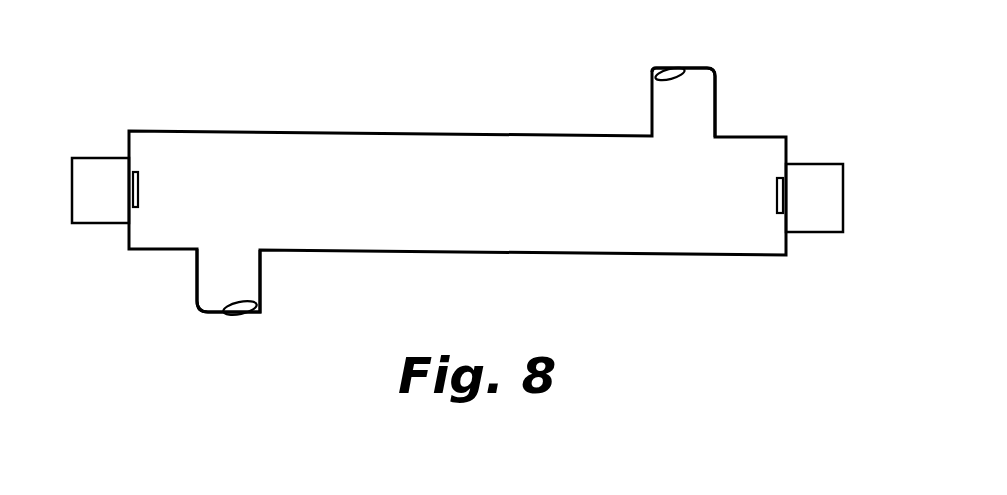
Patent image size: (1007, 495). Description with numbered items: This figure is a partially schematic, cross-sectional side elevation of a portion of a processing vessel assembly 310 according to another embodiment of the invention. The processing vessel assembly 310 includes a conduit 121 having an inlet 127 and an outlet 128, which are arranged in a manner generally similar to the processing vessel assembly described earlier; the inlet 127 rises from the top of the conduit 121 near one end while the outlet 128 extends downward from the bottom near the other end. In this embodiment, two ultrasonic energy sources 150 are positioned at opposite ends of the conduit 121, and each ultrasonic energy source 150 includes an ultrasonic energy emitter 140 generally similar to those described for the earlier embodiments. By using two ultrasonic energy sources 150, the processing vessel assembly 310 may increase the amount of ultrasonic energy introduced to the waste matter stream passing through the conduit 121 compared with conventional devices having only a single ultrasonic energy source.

The processing vessel assembly 310 is at (472, 160).
The conduit 121 is at (416, 133).
The inlet 127 is at (688, 137).
The outlet 128 is at (237, 250).
The ultrasonic energy emitter 140 is at (138, 185).
The ultrasonic energy source 150 is at (93, 226).